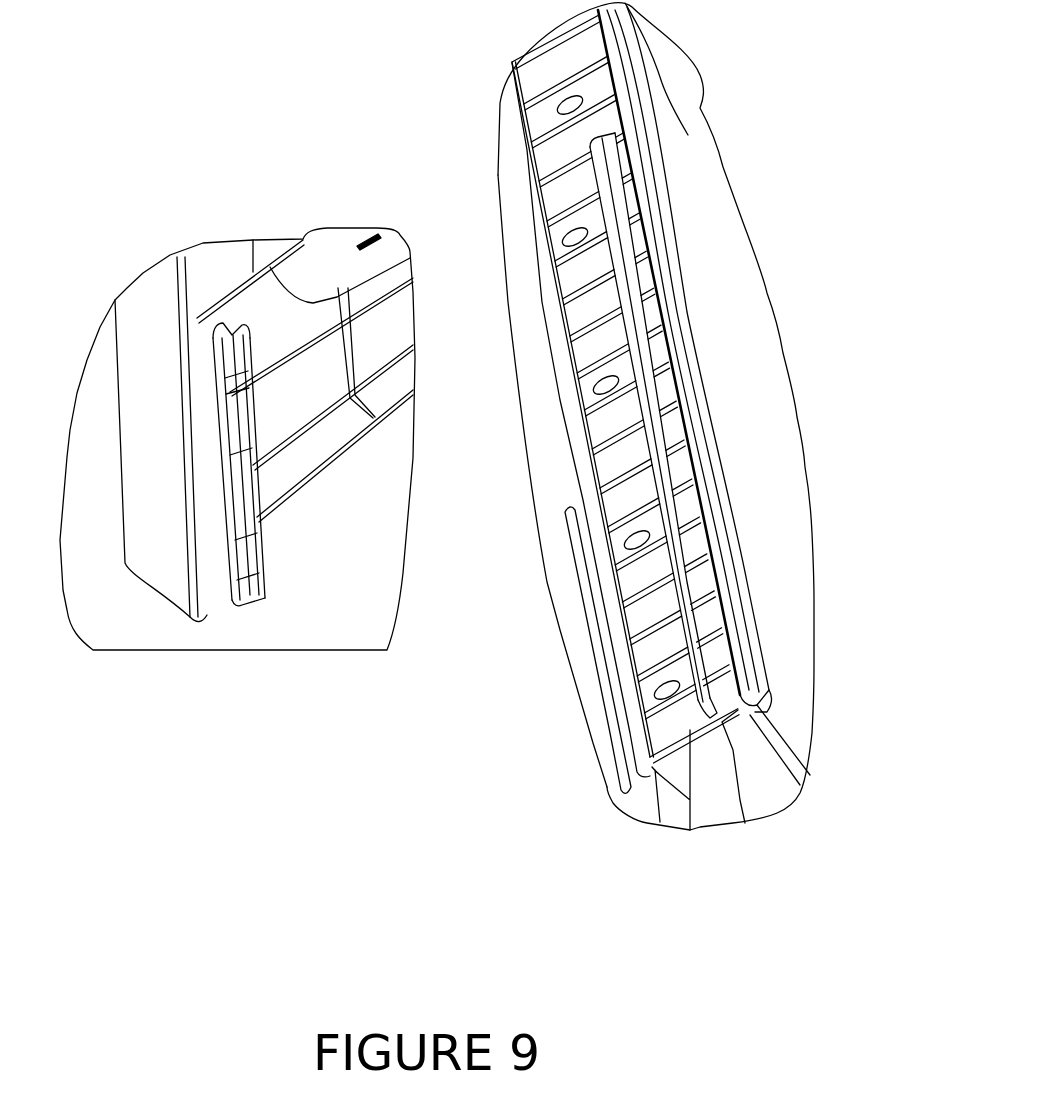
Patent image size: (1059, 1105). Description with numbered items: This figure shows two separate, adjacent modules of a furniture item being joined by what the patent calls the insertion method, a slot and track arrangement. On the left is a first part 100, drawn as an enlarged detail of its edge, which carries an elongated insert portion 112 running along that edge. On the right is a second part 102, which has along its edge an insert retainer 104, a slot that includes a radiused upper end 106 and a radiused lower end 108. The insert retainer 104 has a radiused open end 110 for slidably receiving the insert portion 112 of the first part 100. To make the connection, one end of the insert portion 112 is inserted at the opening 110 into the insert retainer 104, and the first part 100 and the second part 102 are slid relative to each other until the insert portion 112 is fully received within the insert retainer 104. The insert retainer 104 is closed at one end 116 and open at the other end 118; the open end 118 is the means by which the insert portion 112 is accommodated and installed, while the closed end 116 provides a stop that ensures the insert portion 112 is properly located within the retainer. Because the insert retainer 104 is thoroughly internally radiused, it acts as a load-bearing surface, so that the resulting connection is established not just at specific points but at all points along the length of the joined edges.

The first part 100 is at (125, 228).
The second part 102 is at (797, 195).
The insert retainer 104 is at (723, 717).
The radiused upper end 106 is at (740, 745).
The radiused lower end 108 is at (712, 720).
The open end 110 is at (680, 462).
The insert portion 112 is at (230, 607).
The closed end 116 is at (613, 150).
The open end 118 is at (722, 685).